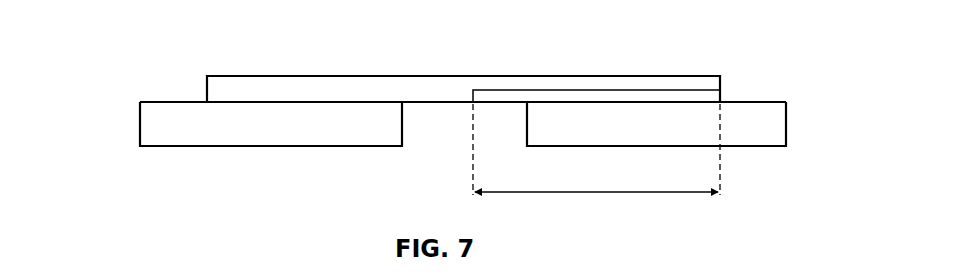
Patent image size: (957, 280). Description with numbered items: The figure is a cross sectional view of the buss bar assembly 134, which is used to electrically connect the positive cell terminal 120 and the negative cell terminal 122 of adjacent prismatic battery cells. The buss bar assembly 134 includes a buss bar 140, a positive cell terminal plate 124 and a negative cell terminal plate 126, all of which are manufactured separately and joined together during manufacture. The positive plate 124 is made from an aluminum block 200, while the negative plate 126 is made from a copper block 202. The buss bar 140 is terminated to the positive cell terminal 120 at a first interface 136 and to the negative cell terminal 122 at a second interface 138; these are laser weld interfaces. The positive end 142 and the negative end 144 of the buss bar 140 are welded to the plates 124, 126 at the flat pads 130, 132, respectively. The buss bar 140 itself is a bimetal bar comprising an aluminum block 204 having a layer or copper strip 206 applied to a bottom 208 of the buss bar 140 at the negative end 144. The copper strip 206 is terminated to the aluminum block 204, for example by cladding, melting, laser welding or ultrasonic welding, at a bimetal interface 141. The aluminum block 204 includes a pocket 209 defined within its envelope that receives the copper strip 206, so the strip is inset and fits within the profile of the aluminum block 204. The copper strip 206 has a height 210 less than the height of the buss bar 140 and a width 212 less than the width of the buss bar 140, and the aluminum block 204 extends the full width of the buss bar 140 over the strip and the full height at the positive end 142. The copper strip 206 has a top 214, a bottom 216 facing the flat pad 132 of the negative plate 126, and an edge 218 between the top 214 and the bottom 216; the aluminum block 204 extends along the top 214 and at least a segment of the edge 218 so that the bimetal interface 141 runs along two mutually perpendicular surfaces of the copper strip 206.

The positive cell terminal 120 is at (217, 125).
The negative cell terminal 122 is at (667, 126).
The positive cell terminal plate 124 is at (152, 123).
The negative cell terminal plate 126 is at (777, 128).
The flat pad 130 is at (153, 102).
The flat pad 132 is at (760, 102).
The buss bar assembly 134 is at (123, 40).
The first interface 136 is at (201, 98).
The second interface 138 is at (725, 97).
The buss bar 140 is at (375, 83).
The bimetal interface 141 is at (573, 86).
The positive end 142 is at (217, 80).
The negative end 144 is at (703, 83).
The aluminum block 200 is at (277, 130).
The copper block 202 is at (548, 128).
The aluminum block 204 is at (298, 83).
The copper strip 206 is at (533, 95).
The bottom 208 is at (430, 103).
The pocket 209 is at (668, 86).
The height 210 is at (604, 67).
The width 212 is at (570, 197).
The top 214 is at (490, 88).
The bottom 216 is at (487, 103).
The edge 218 is at (472, 96).